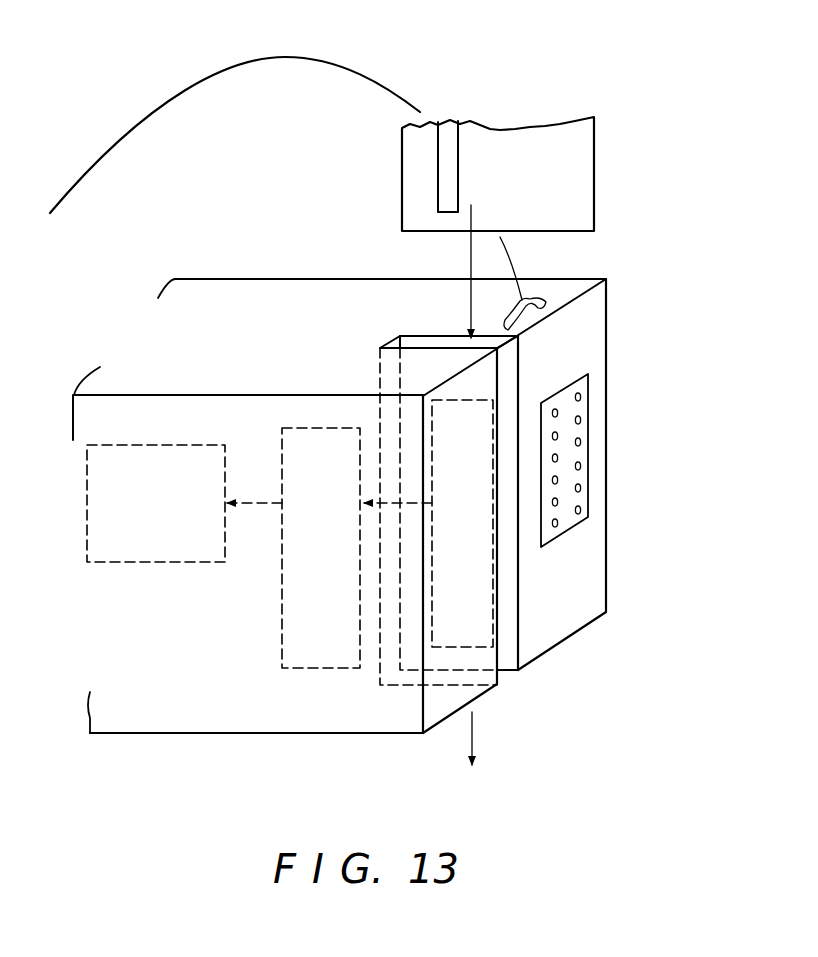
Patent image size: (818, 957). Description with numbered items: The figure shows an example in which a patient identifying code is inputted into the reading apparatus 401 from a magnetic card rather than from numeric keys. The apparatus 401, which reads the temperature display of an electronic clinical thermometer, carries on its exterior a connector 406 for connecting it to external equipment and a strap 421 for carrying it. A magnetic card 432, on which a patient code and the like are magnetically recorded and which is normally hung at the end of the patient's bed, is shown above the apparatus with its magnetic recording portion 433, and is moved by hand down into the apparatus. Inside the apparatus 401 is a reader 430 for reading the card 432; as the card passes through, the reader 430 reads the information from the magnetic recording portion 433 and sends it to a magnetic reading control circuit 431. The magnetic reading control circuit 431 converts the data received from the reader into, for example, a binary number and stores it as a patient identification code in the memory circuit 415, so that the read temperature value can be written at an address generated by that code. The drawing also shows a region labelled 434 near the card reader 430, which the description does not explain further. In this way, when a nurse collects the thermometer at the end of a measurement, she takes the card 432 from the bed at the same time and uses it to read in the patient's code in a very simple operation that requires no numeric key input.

The apparatus for reading the temperature display 401 is at (293, 720).
The connector 406 is at (583, 428).
The memory circuit 415 is at (87, 477).
The strap 421 is at (372, 83).
The reader 430 is at (447, 648).
The magnetic reading control circuit 431 is at (282, 646).
The magnetic card 432 is at (585, 185).
The magnetic recording portion 433 is at (455, 130).
The card insertion slot 434 is at (505, 587).